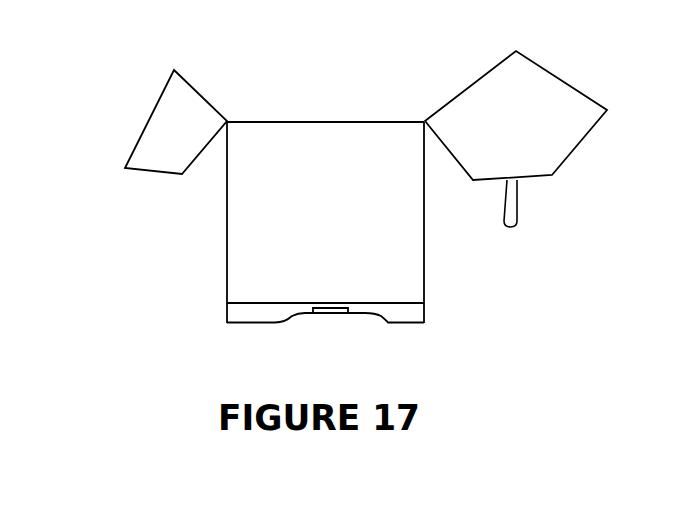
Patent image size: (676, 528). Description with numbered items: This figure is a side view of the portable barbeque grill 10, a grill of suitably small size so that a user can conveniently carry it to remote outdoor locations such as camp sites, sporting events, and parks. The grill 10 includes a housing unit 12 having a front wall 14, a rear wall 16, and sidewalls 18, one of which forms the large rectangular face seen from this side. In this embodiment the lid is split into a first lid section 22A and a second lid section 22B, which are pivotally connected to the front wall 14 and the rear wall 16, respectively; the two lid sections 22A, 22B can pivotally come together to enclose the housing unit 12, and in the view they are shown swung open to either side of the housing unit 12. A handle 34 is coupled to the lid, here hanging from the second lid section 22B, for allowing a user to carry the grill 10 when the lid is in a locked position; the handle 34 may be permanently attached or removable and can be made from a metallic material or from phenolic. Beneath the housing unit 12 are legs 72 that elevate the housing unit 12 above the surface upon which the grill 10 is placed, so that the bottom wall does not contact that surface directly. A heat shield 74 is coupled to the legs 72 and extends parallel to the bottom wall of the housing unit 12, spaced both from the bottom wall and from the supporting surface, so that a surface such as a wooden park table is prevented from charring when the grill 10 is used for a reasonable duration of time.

The portable barbeque grill 10 is at (113, 43).
The housing unit 12 is at (212, 272).
The front wall 14 is at (227, 234).
The rear wall 16 is at (425, 262).
The sidewalls 18 is at (339, 197).
The first lid section 22A is at (202, 138).
The second lid section 22B is at (542, 143).
The handle 34 is at (508, 212).
The legs 72 is at (408, 313).
The heat shield 74 is at (327, 312).